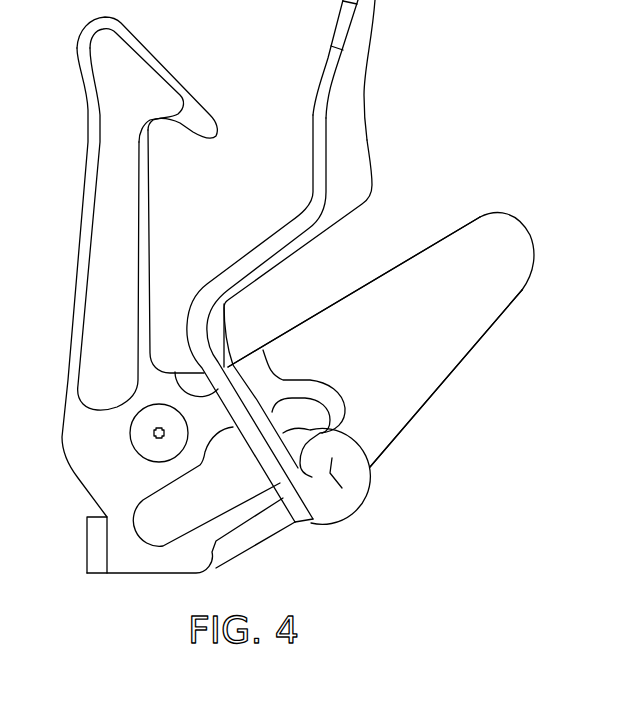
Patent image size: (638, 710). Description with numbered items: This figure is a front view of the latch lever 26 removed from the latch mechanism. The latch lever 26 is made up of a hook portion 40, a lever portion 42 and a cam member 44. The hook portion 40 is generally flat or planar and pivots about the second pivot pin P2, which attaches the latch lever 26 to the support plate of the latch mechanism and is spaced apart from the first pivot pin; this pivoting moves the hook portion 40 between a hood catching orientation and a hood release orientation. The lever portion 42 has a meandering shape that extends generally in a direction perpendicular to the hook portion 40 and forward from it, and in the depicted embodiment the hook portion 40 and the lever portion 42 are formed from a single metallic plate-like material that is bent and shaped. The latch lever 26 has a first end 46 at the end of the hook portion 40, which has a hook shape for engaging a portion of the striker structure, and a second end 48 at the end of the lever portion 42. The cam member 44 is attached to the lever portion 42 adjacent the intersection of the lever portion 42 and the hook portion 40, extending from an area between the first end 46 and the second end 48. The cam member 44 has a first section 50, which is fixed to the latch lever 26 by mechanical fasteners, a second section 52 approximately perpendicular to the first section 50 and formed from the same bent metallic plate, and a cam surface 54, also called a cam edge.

The latch lever 26 is at (292, 286).
The hook portion 40 is at (118, 117).
The lever portion 42 is at (266, 273).
The cam member 44 is at (507, 247).
The first end 46 is at (209, 112).
The second end 48 is at (371, 36).
The first section 50 is at (356, 462).
The second section 52 is at (496, 322).
The cam surface 54 is at (433, 244).
The second pivot pin P2 is at (141, 433).